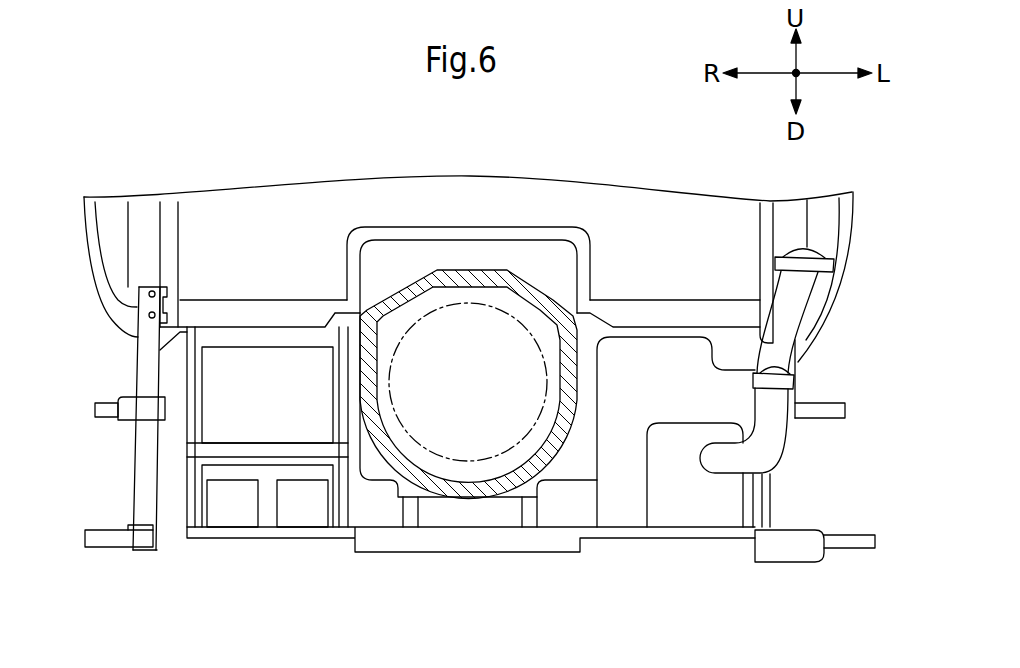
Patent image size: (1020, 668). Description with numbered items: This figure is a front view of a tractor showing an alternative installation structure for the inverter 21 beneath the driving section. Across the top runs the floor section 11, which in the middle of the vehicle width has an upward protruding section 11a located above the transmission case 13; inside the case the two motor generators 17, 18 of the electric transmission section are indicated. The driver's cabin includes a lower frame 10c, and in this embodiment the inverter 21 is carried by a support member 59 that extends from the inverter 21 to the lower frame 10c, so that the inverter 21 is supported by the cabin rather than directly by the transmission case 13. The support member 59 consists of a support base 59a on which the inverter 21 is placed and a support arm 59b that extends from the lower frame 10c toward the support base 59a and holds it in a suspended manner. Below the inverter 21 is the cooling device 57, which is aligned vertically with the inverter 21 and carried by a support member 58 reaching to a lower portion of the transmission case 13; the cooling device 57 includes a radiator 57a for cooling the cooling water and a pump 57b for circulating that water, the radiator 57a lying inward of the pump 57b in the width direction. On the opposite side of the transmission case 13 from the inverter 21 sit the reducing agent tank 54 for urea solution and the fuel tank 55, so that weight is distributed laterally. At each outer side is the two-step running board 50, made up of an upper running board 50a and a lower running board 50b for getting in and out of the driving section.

The lower frame 10c is at (310, 310).
The floor section 11 is at (223, 300).
The upward protruding section 11a is at (535, 227).
The transmission case 13 is at (478, 488).
The motor generator 17 is at (452, 302).
The motor generator 18 is at (468, 382).
The inverter 21 is at (262, 362).
The two-step running board 50 is at (462, 433).
The upper running board 50a is at (100, 398).
The lower running board 50b is at (110, 528).
The reducing agent tank 54 is at (687, 500).
The fuel tank 55 is at (696, 427).
The cooling device 57 is at (432, 542).
The radiator 57a is at (312, 514).
The pump 57b is at (223, 514).
The support member 58 is at (267, 530).
The support member 59 is at (411, 433).
The support base 59a is at (232, 452).
The support arm 59b is at (186, 381).